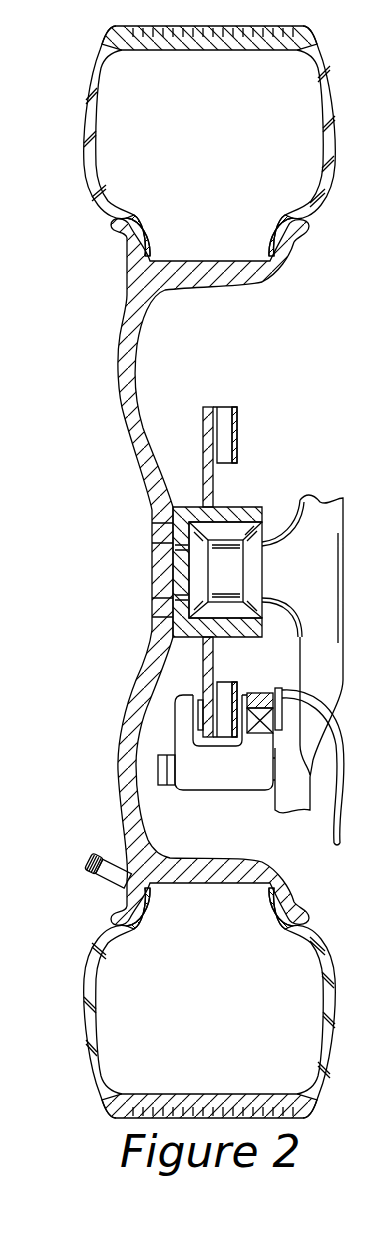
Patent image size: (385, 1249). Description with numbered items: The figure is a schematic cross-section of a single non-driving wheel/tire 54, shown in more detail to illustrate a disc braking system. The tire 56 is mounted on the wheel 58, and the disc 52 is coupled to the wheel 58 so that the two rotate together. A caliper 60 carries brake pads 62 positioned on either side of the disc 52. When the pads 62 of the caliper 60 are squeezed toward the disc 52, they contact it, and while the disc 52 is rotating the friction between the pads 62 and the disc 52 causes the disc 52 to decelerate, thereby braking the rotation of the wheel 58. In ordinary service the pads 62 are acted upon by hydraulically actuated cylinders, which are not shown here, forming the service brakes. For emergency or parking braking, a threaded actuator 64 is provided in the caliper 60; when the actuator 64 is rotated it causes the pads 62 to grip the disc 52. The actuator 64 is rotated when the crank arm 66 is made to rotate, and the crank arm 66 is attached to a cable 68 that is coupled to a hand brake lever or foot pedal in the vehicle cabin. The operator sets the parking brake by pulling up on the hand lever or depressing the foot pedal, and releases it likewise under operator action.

The disc 52 is at (205, 660).
The wheel/tire 54 is at (66, 882).
The tire 56 is at (297, 37).
The wheel 58 is at (148, 833).
The caliper 60 is at (234, 784).
The brake pads 62 is at (242, 692).
The threaded actuator 64 is at (267, 718).
The crank arm 66 is at (302, 654).
The cable 68 is at (343, 812).